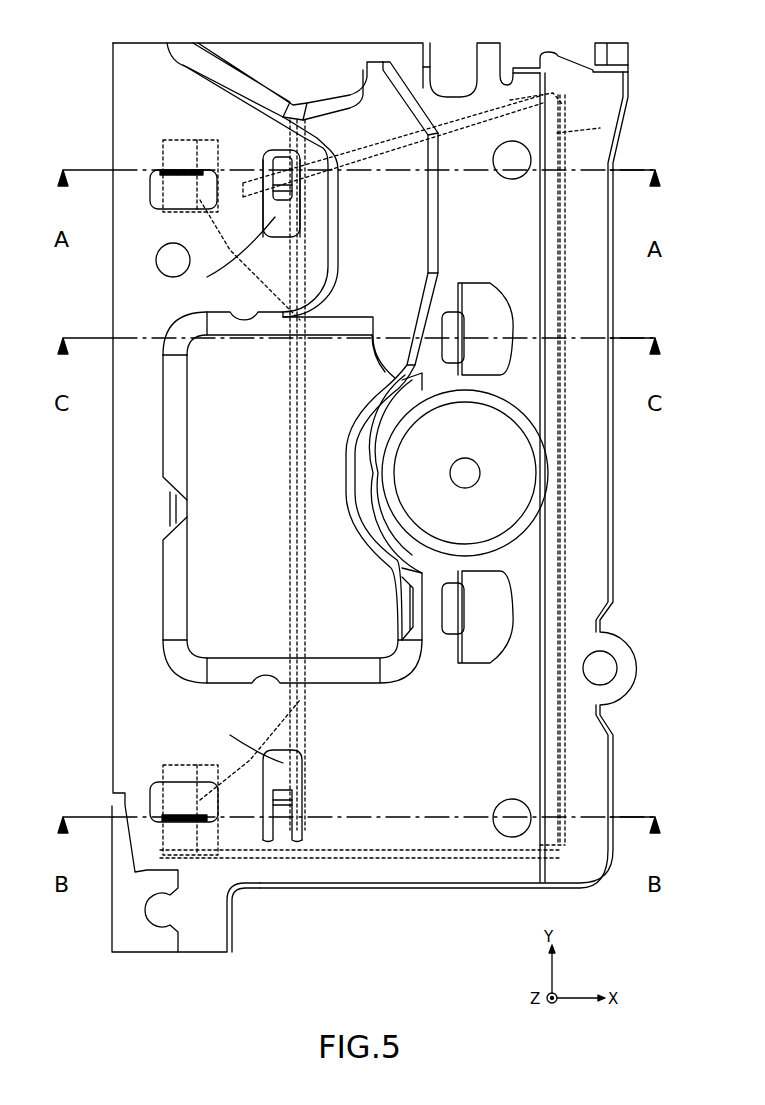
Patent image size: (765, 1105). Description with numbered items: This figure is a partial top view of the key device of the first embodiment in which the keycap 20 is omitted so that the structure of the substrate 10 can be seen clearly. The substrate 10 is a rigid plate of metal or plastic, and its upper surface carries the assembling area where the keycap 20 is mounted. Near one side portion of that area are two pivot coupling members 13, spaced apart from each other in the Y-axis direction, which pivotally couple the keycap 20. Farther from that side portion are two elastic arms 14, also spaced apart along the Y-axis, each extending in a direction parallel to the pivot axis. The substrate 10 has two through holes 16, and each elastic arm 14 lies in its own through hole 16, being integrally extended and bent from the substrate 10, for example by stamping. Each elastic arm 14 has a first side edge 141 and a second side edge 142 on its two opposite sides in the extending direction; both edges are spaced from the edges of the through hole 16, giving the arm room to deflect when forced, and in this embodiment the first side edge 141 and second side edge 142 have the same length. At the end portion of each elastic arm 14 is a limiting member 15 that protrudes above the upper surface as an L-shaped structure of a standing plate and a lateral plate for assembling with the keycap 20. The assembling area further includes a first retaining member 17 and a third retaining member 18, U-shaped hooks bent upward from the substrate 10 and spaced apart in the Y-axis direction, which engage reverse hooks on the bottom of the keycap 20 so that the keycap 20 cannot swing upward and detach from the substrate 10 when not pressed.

The substrate 10 is at (113, 528).
The pivot coupling member 13 is at (160, 170).
The elastic arm 14 is at (283, 165).
The first side edge 141 is at (263, 160).
The second side edge 142 is at (292, 195).
The limiting member 15 is at (340, 197).
The through hole 16 is at (275, 217).
The first retaining member 17 is at (460, 605).
The third retaining member 18 is at (460, 318).
The keycap 20 is at (600, 128).